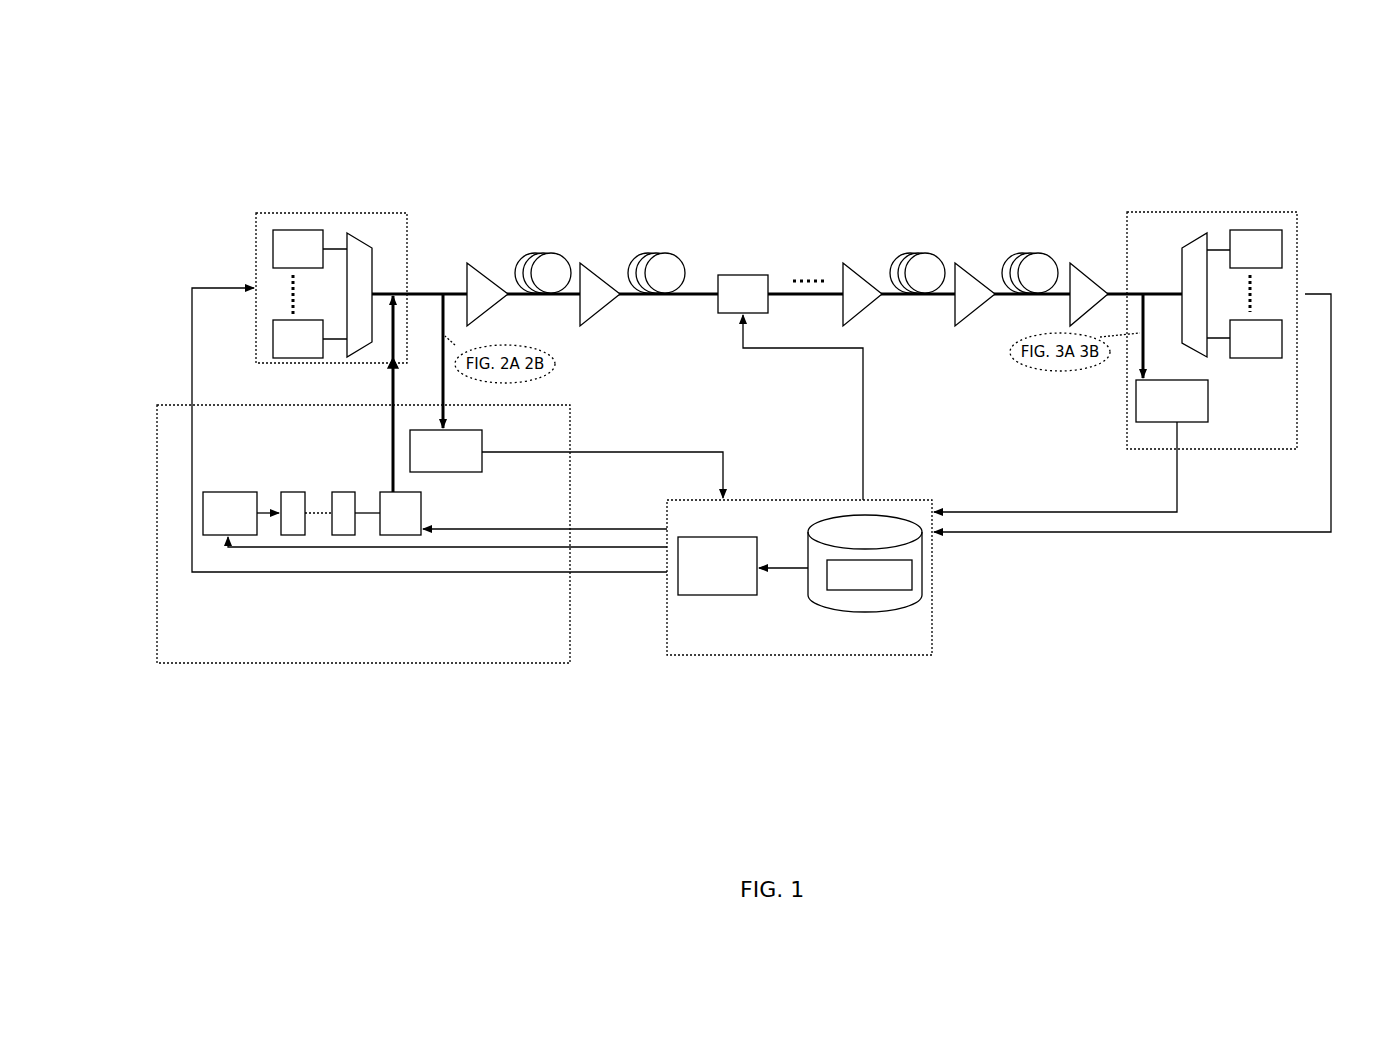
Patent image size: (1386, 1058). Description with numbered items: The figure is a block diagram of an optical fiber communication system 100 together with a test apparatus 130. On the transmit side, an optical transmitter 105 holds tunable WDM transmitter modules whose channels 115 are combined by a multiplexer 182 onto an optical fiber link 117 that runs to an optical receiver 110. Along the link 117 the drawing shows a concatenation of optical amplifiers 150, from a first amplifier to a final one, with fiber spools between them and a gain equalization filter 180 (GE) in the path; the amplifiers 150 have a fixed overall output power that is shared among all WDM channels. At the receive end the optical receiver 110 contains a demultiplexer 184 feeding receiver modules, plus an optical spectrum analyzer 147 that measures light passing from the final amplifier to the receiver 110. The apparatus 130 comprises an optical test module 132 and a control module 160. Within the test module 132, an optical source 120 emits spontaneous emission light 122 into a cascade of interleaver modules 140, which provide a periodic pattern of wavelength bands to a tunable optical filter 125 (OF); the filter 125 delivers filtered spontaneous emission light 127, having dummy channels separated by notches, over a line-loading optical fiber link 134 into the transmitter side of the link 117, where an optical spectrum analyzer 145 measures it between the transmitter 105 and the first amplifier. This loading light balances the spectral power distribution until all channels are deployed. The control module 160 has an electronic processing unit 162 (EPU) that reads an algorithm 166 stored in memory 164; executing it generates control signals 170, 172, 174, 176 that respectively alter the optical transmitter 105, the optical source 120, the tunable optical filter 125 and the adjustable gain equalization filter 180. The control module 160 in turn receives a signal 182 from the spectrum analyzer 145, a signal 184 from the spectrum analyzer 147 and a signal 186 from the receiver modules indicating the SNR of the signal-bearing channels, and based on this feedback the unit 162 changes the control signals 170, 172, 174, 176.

The optical fiber communication system 100 is at (127, 118).
The optical transmitter 105 is at (396, 212).
The optical receiver 110 is at (1296, 222).
The channels 115 is at (310, 271).
The optical fiber link 117 is at (833, 200).
The optical source 120 is at (220, 537).
The spontaneous emission light 122 is at (266, 505).
The tunable optical filter 125 is at (393, 537).
The filtered spontaneous emission light 127 is at (391, 370).
The apparatus 130 is at (127, 387).
The optical test module 132 is at (430, 650).
The line-loading optical fiber link 134 is at (391, 425).
The interleaver module 140 is at (338, 537).
The optical spectrum analyzer 145 is at (482, 432).
The optical spectrum analyzer 147 is at (1136, 407).
The optical amplifiers 150 is at (478, 270).
The control module 160 is at (799, 577).
The electronic processing unit 162 is at (717, 566).
The non-transient computer readable memory 164 is at (840, 563).
The algorithm 166 is at (912, 574).
The control signal 170 is at (613, 574).
The control signal 172 is at (657, 548).
The control signal 174 is at (588, 530).
The control signal 176 is at (864, 438).
The gain equalization filter 180 is at (731, 273).
The multiplexer / signal 182 is at (352, 236).
The demultiplexer / signal 184 is at (1190, 247).
The signal 186 is at (1084, 530).